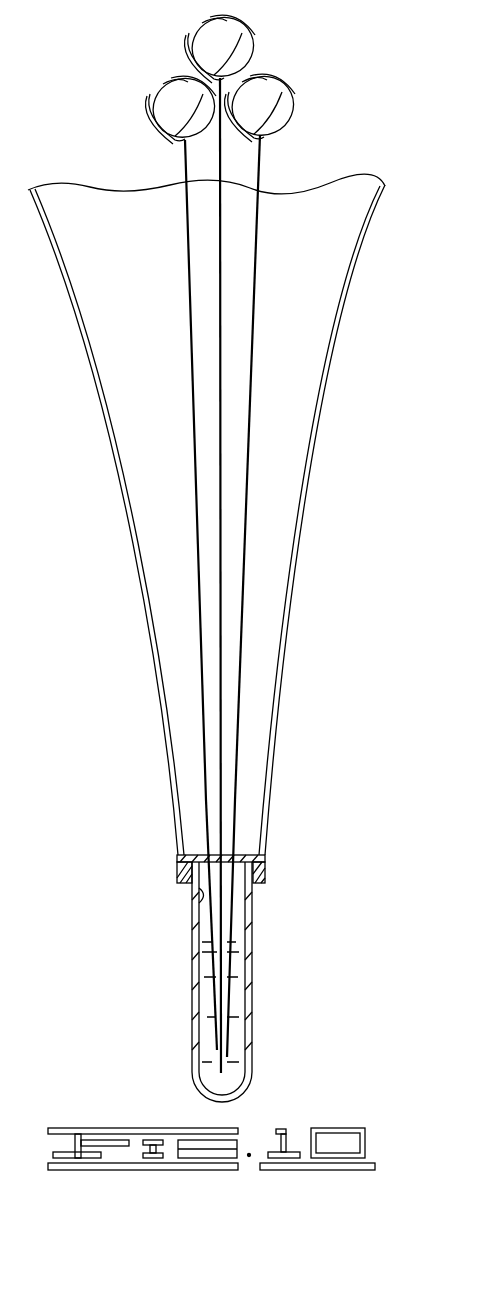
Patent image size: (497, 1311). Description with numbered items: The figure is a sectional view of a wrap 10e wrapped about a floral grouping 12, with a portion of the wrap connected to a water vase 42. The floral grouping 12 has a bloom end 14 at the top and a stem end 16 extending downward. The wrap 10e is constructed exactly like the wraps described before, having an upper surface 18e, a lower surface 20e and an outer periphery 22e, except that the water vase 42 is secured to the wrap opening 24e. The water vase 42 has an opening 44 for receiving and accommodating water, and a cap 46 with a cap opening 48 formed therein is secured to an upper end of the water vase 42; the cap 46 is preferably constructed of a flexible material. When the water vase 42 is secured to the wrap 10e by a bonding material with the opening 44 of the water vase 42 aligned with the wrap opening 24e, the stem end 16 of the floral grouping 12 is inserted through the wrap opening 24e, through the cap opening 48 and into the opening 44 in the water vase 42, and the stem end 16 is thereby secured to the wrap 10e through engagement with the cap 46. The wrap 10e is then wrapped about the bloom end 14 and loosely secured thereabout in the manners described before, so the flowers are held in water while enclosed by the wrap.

The wrap 10e is at (108, 477).
The floral grouping 12 is at (173, 148).
The bloom end 14 is at (176, 55).
The stem end 16 is at (230, 920).
The upper surface 18e is at (300, 547).
The lower surface 20e is at (305, 483).
The outer periphery 22e is at (385, 185).
The wrap opening 24e is at (258, 885).
The water vase 42 is at (193, 948).
The opening 44 is at (196, 902).
The cap 46 is at (247, 860).
The cap opening 48 is at (218, 855).